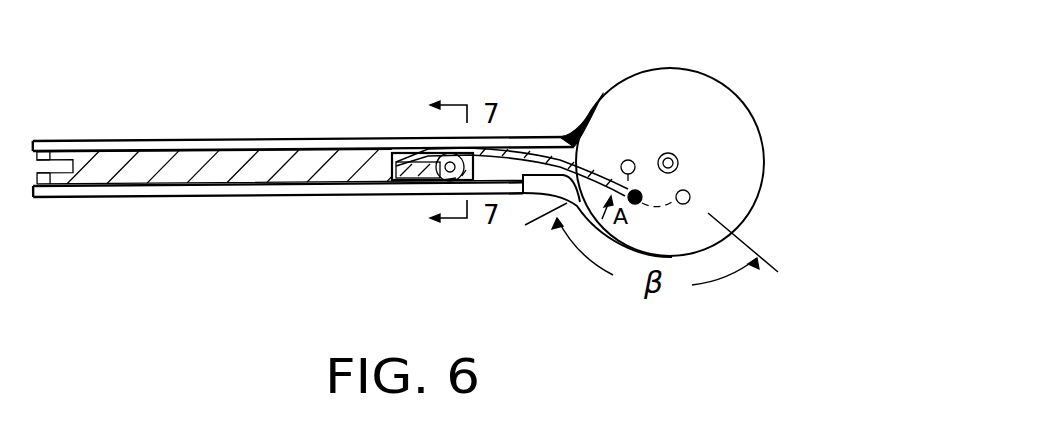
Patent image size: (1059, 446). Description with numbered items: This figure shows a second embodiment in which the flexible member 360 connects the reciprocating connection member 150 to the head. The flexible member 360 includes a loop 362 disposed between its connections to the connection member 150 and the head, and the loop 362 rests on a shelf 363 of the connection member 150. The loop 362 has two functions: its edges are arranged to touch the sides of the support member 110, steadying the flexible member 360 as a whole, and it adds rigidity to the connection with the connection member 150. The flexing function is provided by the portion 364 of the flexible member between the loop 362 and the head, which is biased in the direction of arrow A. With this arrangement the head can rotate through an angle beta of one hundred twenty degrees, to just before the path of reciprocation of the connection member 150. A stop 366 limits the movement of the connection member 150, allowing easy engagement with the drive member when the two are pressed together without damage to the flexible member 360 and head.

The support member 110 is at (352, 93).
The connection member 150 is at (218, 158).
The flexible member 360 is at (607, 185).
The loop 362 is at (447, 183).
The shelf 363 is at (403, 182).
The portion of the flexible member 364 is at (573, 157).
The stop 366 is at (523, 194).